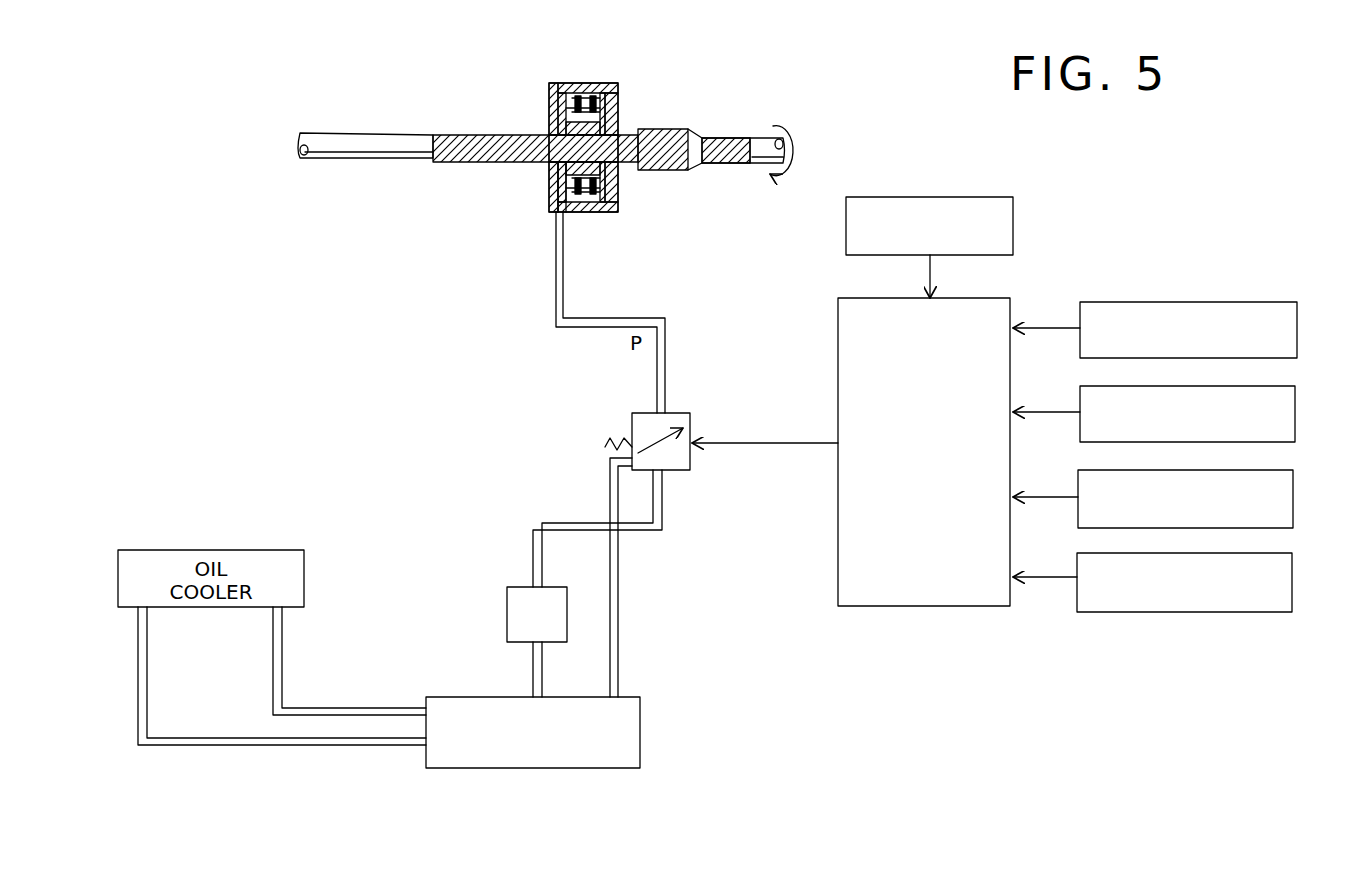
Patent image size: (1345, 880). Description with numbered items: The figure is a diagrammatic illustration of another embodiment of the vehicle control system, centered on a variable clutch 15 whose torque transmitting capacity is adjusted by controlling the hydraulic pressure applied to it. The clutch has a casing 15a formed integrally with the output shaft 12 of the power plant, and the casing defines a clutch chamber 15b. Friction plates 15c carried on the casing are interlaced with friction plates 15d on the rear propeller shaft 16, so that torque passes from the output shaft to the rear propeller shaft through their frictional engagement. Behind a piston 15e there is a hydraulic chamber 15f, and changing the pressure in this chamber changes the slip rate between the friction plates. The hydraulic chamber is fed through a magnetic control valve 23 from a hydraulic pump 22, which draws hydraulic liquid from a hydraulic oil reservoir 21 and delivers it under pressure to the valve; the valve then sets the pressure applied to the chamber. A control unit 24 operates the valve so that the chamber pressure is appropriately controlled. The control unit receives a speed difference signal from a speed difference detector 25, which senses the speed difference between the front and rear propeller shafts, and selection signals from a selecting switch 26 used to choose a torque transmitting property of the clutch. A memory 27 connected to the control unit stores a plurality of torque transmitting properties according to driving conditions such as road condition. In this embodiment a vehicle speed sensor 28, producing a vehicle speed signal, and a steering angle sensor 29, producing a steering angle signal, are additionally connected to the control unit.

The output shaft 12 is at (460, 135).
The variable clutch 15 is at (612, 74).
The casing 15a is at (573, 83).
The clutch chamber 15b is at (575, 213).
The friction plates 15c is at (597, 205).
The friction plates 15d is at (604, 186).
The piston 15e is at (548, 188).
The hydraulic chamber 15f is at (553, 177).
The rear propeller shaft 16 is at (722, 137).
The hydraulic oil reservoir 21 is at (642, 730).
The hydraulic pump 22 is at (507, 618).
The magnetic control valve 23 is at (692, 462).
The control unit 24 is at (918, 606).
The speed difference detector 25 is at (1272, 470).
The selecting switch 26 is at (1270, 553).
The memory 27 is at (1013, 222).
The vehicle speed sensor 28 is at (1275, 302).
The steering angle sensor 29 is at (1275, 386).